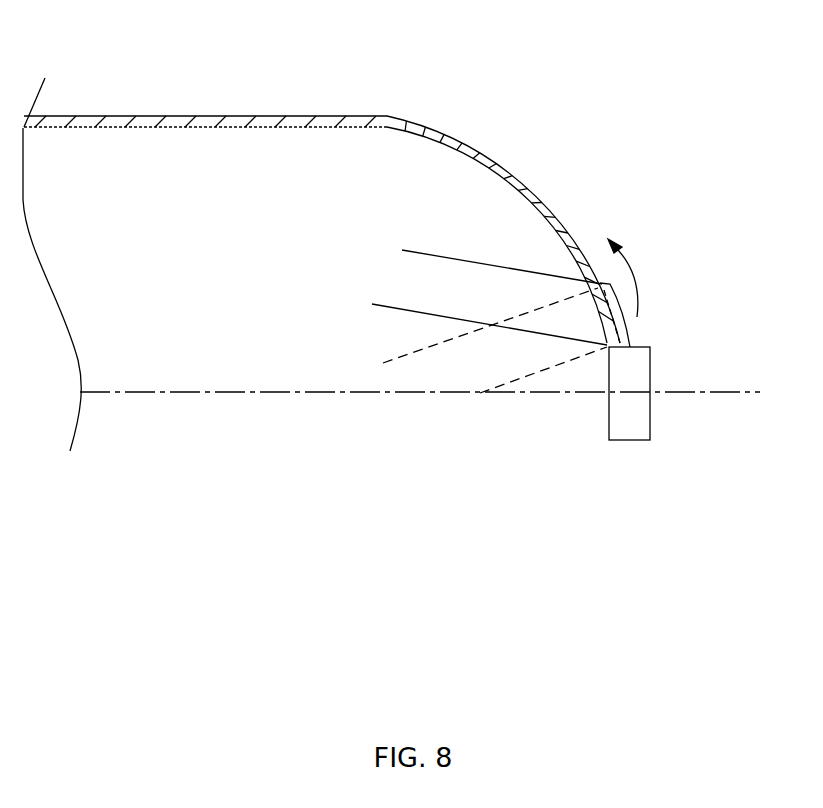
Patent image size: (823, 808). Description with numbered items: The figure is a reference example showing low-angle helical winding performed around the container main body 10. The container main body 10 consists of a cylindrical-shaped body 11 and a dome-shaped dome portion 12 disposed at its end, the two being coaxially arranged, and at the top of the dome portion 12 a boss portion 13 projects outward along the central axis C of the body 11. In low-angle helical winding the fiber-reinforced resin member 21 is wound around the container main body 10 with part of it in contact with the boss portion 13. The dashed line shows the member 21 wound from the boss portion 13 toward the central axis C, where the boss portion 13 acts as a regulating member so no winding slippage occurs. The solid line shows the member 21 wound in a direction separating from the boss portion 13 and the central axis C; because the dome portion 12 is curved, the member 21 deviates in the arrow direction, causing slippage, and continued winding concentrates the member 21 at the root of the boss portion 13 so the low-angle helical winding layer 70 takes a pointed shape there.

The container main body 10 is at (517, 142).
The body 11 is at (166, 115).
The low-angle helical winding layer 70 is at (338, 115).
The dome portion 12 is at (480, 148).
The boss portion 13 is at (628, 427).
The fiber-reinforced resin member 21 is at (463, 258).
The central axis C is at (731, 395).